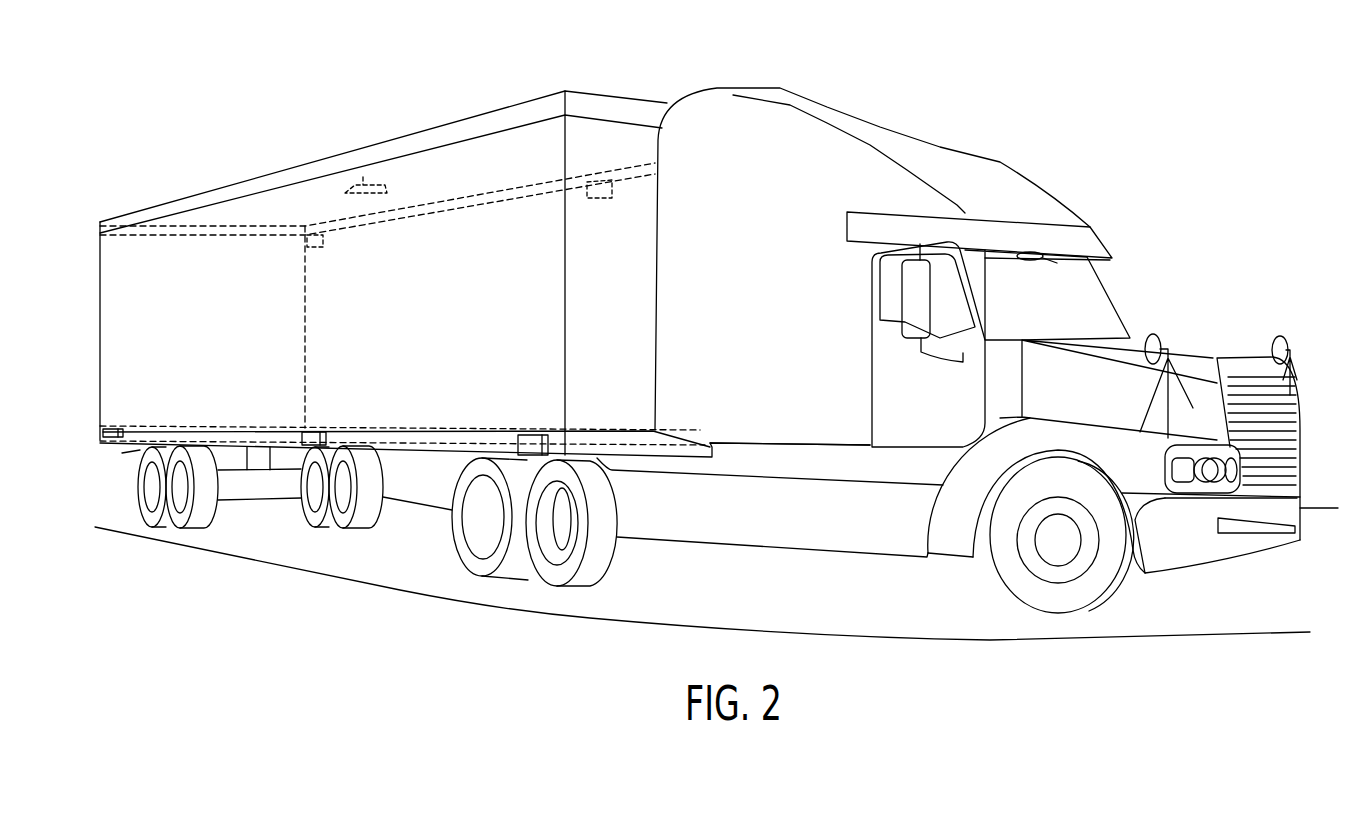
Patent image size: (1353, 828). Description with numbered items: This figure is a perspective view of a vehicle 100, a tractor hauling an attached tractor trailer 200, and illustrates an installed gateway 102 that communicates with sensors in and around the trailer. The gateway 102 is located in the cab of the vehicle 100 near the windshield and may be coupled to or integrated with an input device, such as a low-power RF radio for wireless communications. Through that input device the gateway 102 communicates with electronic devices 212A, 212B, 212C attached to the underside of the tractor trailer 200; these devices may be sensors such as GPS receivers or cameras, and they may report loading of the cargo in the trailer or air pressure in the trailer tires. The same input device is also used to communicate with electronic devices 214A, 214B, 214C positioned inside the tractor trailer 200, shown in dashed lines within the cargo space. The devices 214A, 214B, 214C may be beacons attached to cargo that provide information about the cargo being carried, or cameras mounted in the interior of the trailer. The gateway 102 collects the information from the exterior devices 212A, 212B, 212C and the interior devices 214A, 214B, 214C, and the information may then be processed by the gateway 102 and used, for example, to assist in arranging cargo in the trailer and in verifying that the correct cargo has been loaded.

The tractor / truck 100 is at (1102, 238).
The gateway 102 is at (1057, 263).
The tractor trailer 200 is at (442, 128).
The electronic device 212A is at (112, 438).
The electronic device 212B is at (310, 448).
The electronic device 212C is at (535, 437).
The electronic device 214A is at (313, 237).
The electronic device 214B is at (363, 183).
The electronic device 214C is at (610, 188).